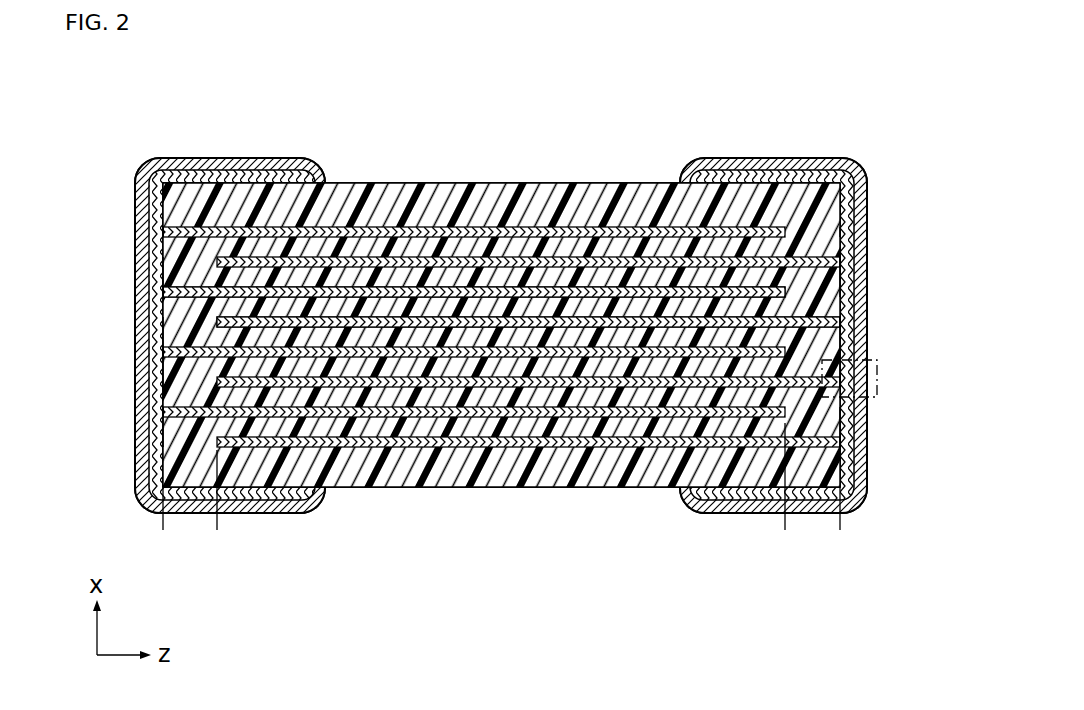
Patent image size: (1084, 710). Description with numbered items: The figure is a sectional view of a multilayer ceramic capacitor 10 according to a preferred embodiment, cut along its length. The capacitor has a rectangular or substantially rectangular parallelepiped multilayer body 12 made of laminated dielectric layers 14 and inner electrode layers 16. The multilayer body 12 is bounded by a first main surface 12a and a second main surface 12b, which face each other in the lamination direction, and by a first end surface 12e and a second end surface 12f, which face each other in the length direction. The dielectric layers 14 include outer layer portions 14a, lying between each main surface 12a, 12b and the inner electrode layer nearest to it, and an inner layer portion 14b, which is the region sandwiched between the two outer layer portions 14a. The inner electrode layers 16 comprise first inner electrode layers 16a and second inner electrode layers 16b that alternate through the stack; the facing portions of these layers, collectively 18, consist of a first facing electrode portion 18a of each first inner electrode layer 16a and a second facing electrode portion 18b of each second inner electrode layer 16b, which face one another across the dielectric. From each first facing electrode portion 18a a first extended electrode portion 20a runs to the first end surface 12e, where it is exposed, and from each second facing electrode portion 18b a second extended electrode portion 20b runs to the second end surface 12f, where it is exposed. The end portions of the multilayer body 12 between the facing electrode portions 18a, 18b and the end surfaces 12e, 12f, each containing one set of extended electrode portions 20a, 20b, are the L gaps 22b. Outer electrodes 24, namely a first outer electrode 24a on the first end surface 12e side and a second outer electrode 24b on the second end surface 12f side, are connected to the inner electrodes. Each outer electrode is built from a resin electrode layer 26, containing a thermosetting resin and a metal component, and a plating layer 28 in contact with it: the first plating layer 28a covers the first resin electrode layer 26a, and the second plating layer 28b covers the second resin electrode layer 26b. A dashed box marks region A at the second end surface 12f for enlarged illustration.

The multilayer ceramic capacitor 10 is at (120, 127).
The multilayer body 12 is at (498, 321).
The first main surface 12a is at (612, 183).
The second main surface 12b is at (643, 490).
The first end surface 12e is at (165, 318).
The second end surface 12f is at (842, 240).
The dielectric layers 14 is at (501, 321).
The outer layer portions 14a is at (517, 213).
The inner layer portion 14b is at (593, 307).
The inner electrode layers 16 is at (501, 394).
The first inner electrode layers 16a is at (343, 287).
The second inner electrode layers 16b is at (395, 322).
The internal electrode layers 18 is at (501, 307).
The first facing electrode portion 18a is at (427, 290).
The second facing electrode portion 18b is at (475, 320).
The first extended electrode portion 20a is at (180, 292).
The second extended electrode portion 20b is at (818, 318).
The L gaps 22b is at (217, 540).
The outer electrodes 24 is at (501, 375).
The first outer electrode 24a is at (230, 284).
The second outer electrode 24b is at (773, 284).
The resin electrode layer 26 is at (570, 615).
The first resin electrode layer 26a is at (290, 110).
The second resin electrode layer 26b is at (850, 110).
The plating layer 28 is at (720, 615).
The first plating layer 28a is at (250, 167).
The second plating layer 28b is at (800, 168).
The enlarged region A is at (877, 360).